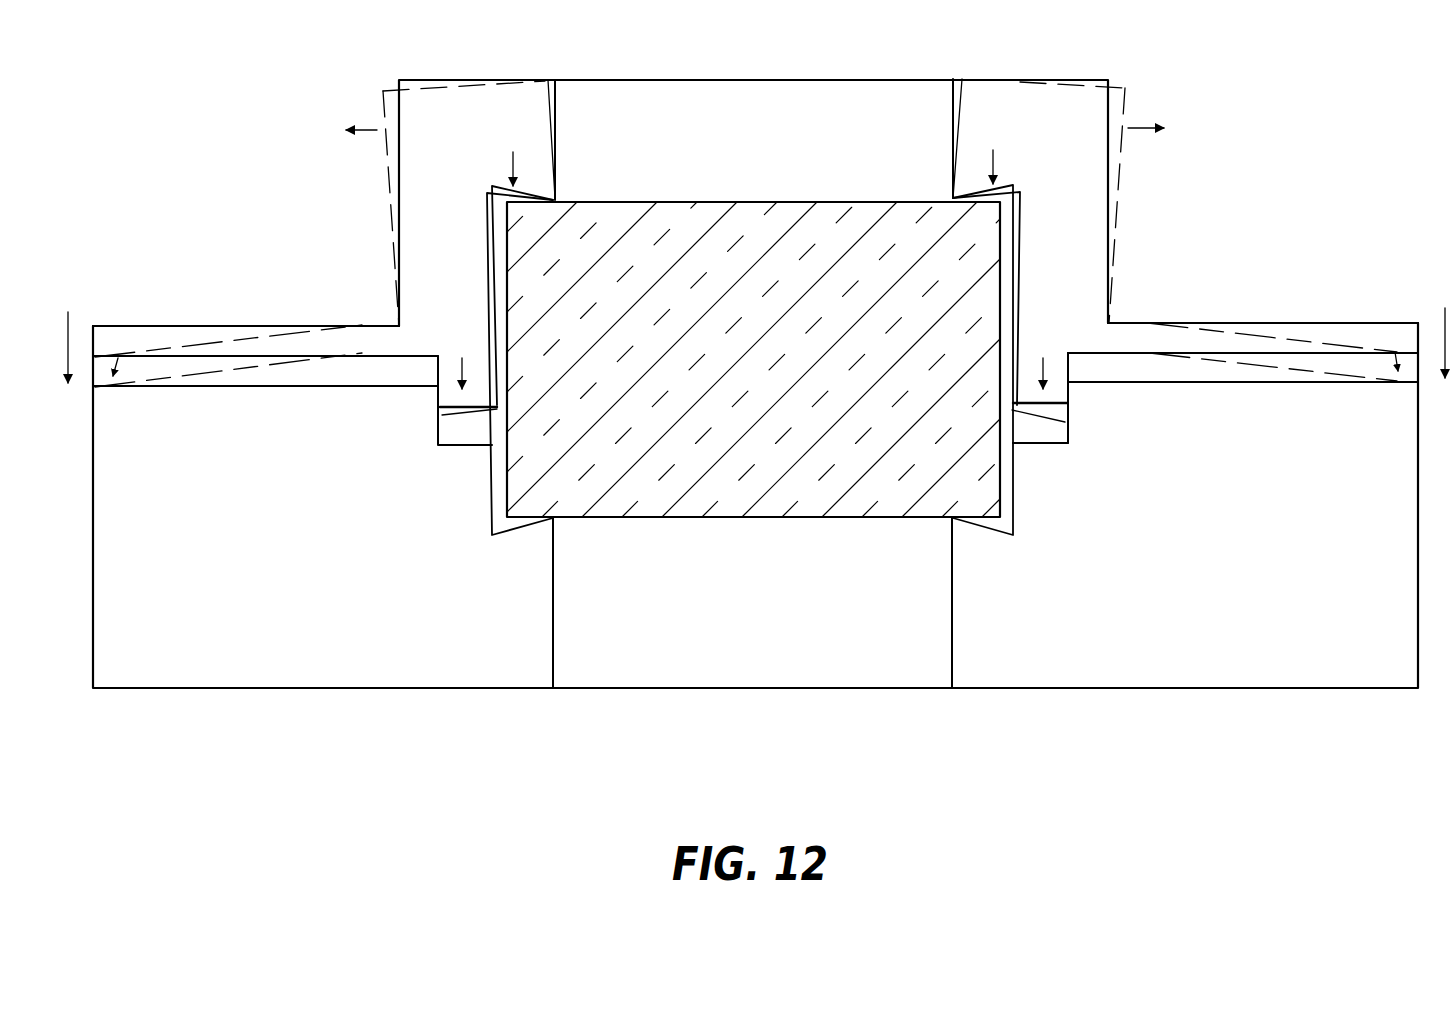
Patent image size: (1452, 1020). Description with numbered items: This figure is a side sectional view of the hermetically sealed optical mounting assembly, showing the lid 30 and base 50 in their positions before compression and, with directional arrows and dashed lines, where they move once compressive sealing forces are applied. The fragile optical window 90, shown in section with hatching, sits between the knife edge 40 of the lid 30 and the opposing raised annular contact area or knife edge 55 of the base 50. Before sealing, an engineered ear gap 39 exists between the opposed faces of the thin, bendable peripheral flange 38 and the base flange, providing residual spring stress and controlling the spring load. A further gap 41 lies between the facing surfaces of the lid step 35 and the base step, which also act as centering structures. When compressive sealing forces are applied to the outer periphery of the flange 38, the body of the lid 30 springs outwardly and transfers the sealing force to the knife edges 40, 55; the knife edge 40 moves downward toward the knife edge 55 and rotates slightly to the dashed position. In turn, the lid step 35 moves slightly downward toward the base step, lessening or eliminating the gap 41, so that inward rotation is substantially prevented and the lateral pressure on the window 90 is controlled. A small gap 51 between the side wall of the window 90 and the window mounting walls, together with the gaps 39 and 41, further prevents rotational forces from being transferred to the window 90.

The lid 30 is at (450, 102).
The knife edge 40 is at (560, 200).
The small gap 51 is at (1005, 273).
The gap 41 is at (1028, 432).
The lid step 35 is at (1057, 415).
The peripheral flange 38 is at (357, 322).
The ear gap 39 is at (305, 373).
The base 50 is at (327, 673).
The raised annular contact area 55 is at (955, 515).
The window 90 is at (783, 502).